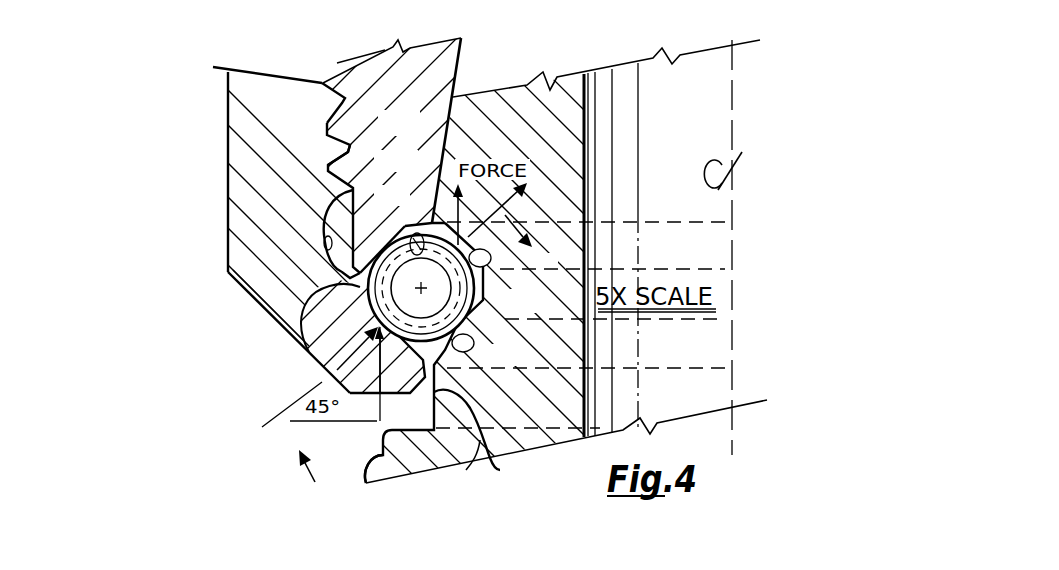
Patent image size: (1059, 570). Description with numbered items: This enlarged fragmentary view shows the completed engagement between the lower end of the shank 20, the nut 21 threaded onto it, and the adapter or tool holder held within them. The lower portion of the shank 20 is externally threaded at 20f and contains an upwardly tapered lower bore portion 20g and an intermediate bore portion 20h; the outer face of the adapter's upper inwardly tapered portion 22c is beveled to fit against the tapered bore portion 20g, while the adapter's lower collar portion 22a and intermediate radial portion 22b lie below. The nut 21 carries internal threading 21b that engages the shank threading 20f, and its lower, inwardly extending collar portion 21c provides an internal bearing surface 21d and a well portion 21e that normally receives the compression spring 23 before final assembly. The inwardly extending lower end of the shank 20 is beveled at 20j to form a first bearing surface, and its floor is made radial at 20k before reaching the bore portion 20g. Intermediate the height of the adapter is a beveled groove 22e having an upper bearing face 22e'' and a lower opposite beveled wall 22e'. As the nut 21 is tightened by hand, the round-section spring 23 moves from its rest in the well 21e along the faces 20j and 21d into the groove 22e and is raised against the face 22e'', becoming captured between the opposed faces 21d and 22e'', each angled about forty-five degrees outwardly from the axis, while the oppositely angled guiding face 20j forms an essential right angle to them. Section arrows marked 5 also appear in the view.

The shank 20 is at (360, 54).
The external threading 20f is at (347, 128).
The upwardly tapered lower bore portion 20g is at (478, 34).
The intermediate bore portion 20h is at (583, 175).
The first bearing surface 20j is at (392, 240).
The radial floor portion 20k is at (432, 221).
The nut 21 is at (236, 210).
The internal threading 21b is at (335, 107).
The collar portion 21c is at (333, 333).
The internal bearing surface 21d is at (350, 353).
The well portion 21e is at (340, 262).
The lower collar portion 22a is at (366, 485).
The intermediate radial portion 22b is at (497, 465).
The upper inwardly tapered portion 22c is at (473, 130).
The beveled groove 22e is at (455, 287).
The lower beveled wall 22e' is at (486, 351).
The upper bearing face 22e'' is at (421, 288).
The compression spring 23 is at (313, 332).
The section line 5- 5 is at (427, 360).